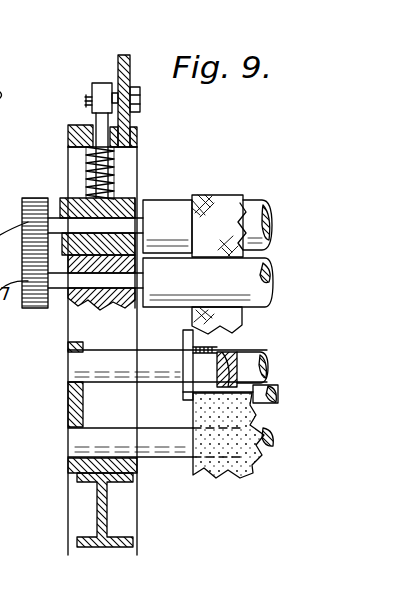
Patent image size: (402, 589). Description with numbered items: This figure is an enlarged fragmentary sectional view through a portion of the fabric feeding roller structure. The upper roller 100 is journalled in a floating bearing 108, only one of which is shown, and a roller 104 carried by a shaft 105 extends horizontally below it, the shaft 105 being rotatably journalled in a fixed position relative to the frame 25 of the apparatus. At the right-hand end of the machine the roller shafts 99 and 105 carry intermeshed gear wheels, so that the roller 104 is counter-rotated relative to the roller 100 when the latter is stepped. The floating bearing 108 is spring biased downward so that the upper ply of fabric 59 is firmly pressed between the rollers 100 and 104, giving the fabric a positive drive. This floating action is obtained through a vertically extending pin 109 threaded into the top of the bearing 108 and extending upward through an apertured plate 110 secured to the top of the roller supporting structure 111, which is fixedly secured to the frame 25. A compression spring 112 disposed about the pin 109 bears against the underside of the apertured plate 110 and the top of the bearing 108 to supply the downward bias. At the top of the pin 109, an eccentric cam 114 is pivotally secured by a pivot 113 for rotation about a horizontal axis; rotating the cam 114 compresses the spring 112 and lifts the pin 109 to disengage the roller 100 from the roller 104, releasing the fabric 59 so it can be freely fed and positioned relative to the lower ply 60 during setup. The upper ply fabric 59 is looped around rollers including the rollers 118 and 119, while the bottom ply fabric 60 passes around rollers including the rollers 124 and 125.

The frame 25 is at (78, 485).
The upper ply of fabric 59 is at (212, 207).
The lower ply fabric 60 is at (222, 463).
The roller shaft 99 is at (57, 220).
The roller 100 is at (252, 207).
The roller 104 is at (172, 288).
The shaft 105 is at (63, 282).
The floating bearings 108 is at (130, 197).
The vertically extending pins 109 is at (100, 123).
The apertured plates 110 is at (70, 138).
The roller supporting structures 111 is at (72, 413).
The compression springs 112 is at (113, 163).
The pivots 113 is at (88, 97).
The cams 114 is at (119, 61).
The roller 118 is at (248, 358).
The roller 119 is at (83, 363).
The roller 124 is at (278, 372).
The roller 125 is at (83, 440).